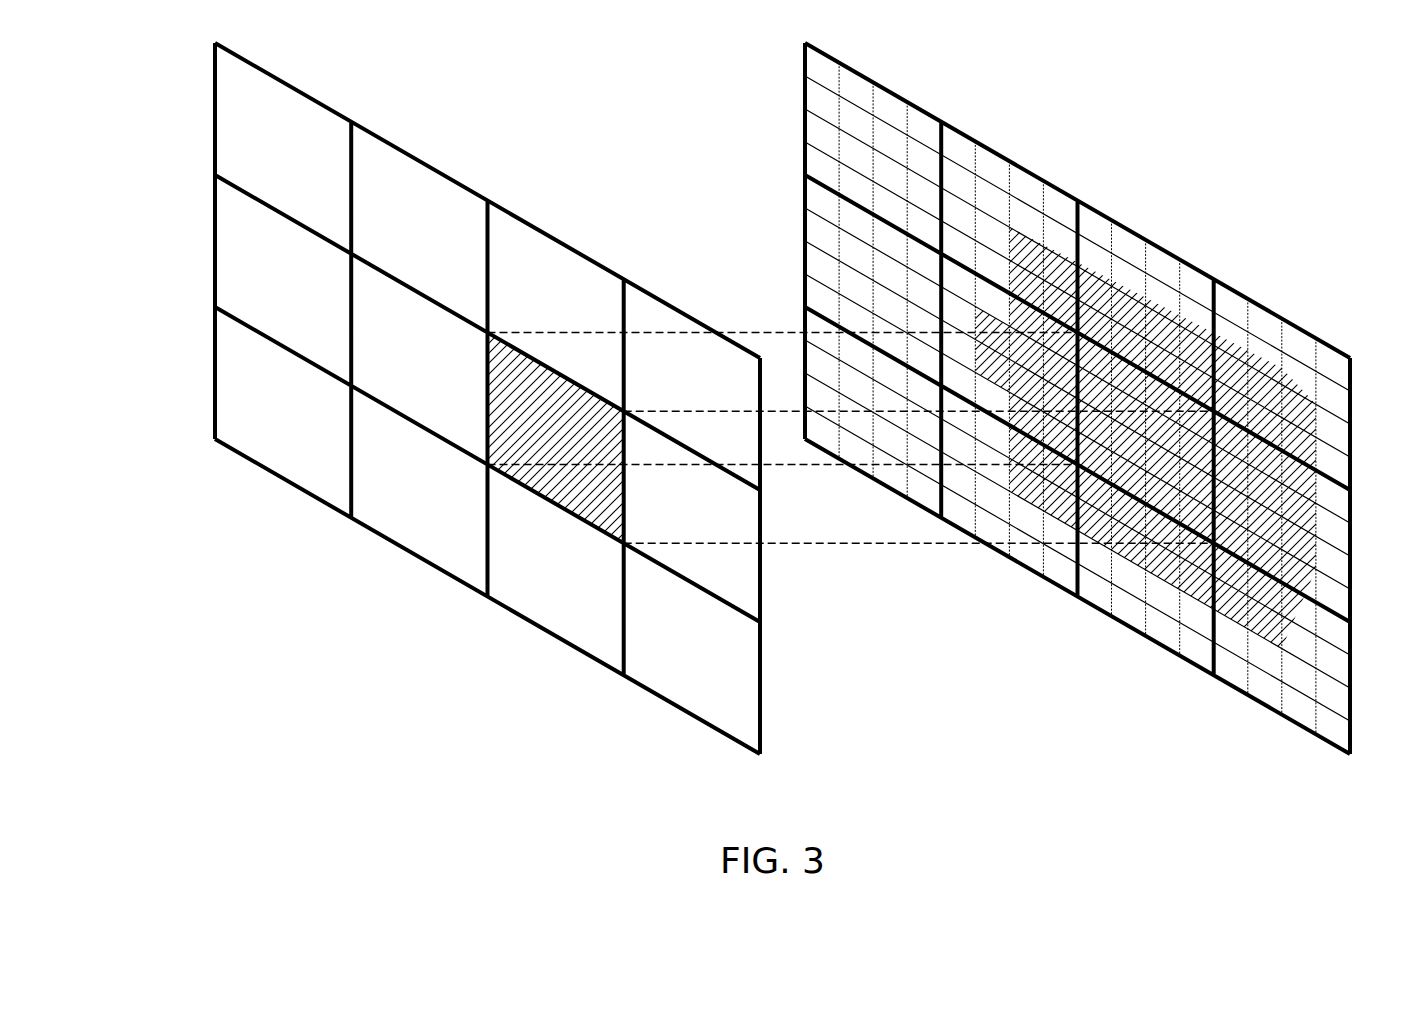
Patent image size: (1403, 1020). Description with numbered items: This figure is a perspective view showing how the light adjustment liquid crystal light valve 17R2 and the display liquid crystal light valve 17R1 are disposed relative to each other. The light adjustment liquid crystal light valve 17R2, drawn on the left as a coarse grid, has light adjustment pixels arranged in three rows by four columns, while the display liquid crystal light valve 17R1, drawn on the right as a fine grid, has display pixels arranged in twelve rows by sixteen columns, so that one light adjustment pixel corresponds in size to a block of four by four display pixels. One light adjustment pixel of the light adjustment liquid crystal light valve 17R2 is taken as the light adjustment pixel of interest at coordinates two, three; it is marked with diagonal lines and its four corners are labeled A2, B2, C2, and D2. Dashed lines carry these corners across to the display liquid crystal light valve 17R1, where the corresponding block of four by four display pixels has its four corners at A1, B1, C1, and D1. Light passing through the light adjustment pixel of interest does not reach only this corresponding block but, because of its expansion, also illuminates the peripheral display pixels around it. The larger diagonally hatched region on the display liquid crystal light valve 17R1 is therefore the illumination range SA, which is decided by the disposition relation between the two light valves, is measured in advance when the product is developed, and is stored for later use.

The light adjustment liquid crystal light valve 17R2 is at (384, 136).
The display liquid crystal light valve 17R1 is at (974, 137).
The corner of light adjustment pixel of interest A2 is at (487, 331).
The corner of light adjustment pixel of interest B2 is at (624, 410).
The corner of light adjustment pixel of interest C2 is at (487, 465).
The corner of light adjustment pixel of interest D2 is at (625, 545).
The corner of corresponding display pixel region A1 is at (1076, 331).
The corner of corresponding display pixel region B1 is at (1214, 410).
The corner of corresponding display pixel region C1 is at (1077, 465).
The corner of corresponding display pixel region D1 is at (1214, 546).
The illumination range SA is at (1127, 565).